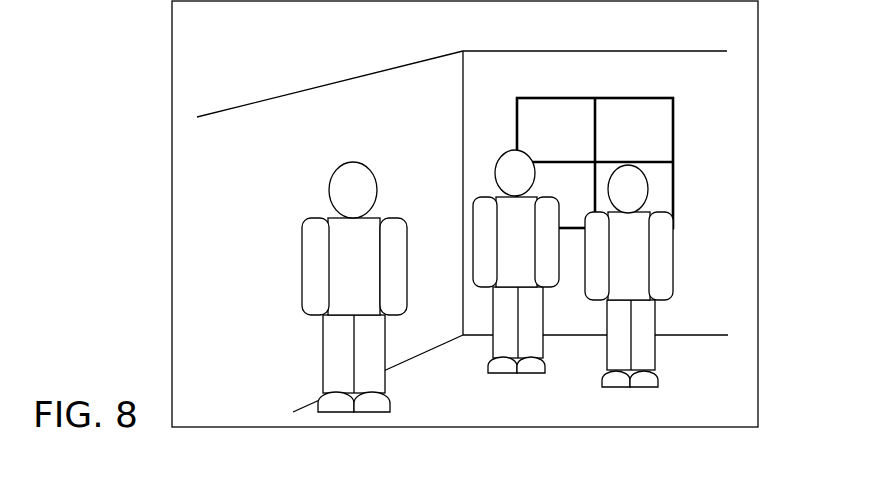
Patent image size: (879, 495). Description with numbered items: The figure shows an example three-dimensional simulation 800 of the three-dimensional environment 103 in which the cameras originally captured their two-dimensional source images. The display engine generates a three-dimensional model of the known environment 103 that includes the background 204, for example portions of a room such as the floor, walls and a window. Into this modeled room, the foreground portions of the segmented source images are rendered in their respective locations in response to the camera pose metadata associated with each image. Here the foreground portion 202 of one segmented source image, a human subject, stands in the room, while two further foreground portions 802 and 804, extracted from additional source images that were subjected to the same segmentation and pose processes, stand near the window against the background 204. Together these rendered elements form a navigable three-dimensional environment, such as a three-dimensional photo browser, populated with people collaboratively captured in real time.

The 3D simulation 800 is at (748, 421).
The background portion 204 is at (437, 112).
The foreground portion 202 is at (371, 301).
The foreground portion 802 is at (534, 274).
The foreground portion 804 is at (648, 287).
The 3D environment 103 is at (635, 418).